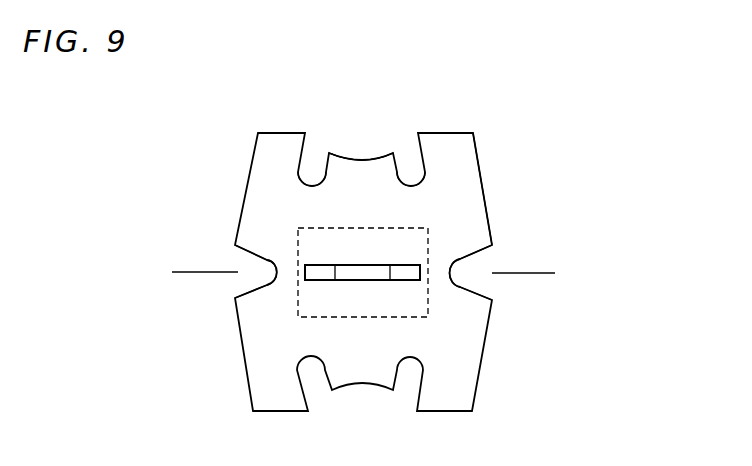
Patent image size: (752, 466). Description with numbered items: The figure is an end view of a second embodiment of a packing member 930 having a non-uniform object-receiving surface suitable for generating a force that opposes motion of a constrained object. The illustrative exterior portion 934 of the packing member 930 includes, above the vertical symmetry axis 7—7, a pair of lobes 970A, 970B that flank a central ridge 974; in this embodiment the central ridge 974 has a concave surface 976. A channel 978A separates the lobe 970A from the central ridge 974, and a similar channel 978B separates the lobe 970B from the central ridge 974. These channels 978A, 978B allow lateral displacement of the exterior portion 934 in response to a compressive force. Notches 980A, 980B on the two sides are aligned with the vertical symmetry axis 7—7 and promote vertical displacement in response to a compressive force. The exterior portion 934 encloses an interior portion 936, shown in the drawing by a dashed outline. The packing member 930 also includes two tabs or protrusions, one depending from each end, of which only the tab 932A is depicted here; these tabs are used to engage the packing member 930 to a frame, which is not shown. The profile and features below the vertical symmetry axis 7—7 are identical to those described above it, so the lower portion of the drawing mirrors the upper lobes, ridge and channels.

The packing member 930 is at (467, 95).
The lobe 970A is at (268, 148).
The lobe 970B is at (455, 153).
The channel 978A is at (320, 158).
The channel 978B is at (410, 158).
The central ridge 974 is at (362, 175).
The concave surface 976 is at (348, 157).
The exterior portion 934 is at (468, 217).
The interior portion 936 is at (362, 228).
The tab 932A is at (377, 281).
The notch 980A is at (237, 282).
The notch 980B is at (493, 287).
The vertical symmetry axis 7 is at (193, 270).